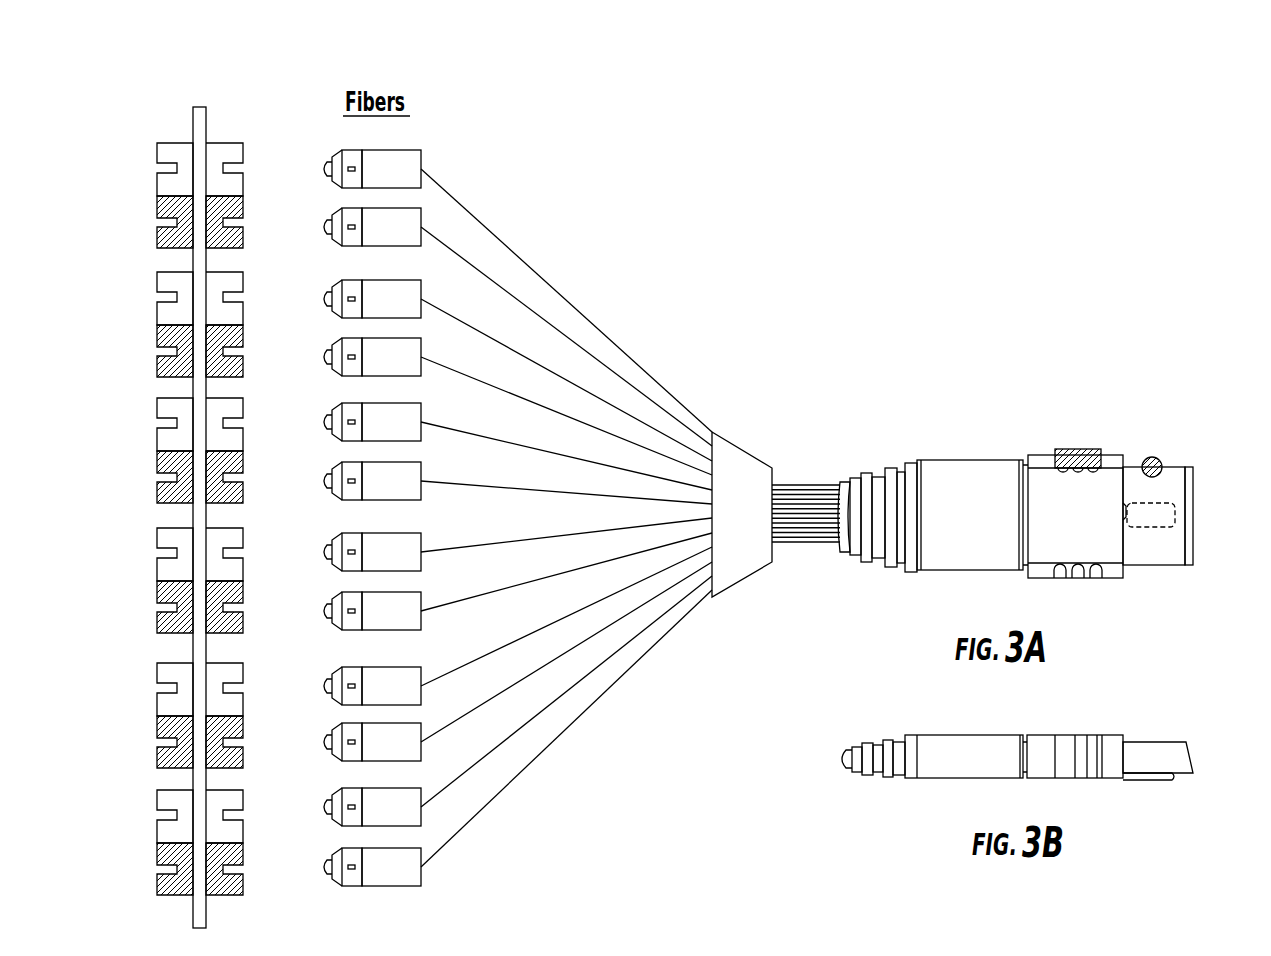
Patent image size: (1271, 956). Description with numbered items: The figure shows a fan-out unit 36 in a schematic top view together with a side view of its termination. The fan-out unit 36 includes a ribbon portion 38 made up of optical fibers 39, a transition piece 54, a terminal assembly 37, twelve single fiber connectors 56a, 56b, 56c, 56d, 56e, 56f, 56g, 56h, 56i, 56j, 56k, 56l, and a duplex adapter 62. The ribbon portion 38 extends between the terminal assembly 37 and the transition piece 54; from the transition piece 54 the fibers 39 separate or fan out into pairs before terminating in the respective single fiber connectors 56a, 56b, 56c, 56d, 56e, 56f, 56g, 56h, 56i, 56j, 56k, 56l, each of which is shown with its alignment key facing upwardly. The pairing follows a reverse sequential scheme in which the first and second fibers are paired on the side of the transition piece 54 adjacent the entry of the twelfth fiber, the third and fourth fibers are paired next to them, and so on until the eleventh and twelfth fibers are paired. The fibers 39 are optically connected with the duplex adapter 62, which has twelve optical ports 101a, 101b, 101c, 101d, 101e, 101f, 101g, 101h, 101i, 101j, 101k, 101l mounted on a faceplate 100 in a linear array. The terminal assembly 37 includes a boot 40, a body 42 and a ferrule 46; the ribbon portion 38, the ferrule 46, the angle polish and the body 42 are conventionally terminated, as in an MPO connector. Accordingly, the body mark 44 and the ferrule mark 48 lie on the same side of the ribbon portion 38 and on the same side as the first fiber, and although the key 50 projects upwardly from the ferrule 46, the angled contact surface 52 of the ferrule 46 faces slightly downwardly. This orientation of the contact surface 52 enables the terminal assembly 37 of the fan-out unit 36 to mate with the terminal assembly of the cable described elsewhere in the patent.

In FIG. 3A, the fan-out unit 36 is at (912, 345).
In FIG. 3A, the terminal assembly 37 is at (1013, 440).
In FIG. 3A, the ribbon portion 38 is at (852, 468).
In FIG. 3A, the optical fibers 39 is at (778, 487).
In FIG. 3A, the boot 40 is at (963, 470).
In FIG. 3B, the boot 40 is at (932, 745).
In FIG. 3A, the body 42 is at (1045, 488).
In FIG. 3B, the body 42 is at (1035, 745).
In FIG. 3A, the body mark 44 is at (1078, 449).
In FIG. 3A, the ferrule 46 is at (1128, 466).
In FIG. 3A, the ferrule mark 48 is at (1152, 457).
In FIG. 3A, the key 50 is at (1160, 505).
In FIG. 3B, the key 50 is at (1170, 781).
In FIG. 3A, the angled contact surface 52 is at (1190, 515).
In FIG. 3B, the angled contact surface 52 is at (1195, 755).
In FIG. 3A, the transition piece 54 is at (735, 447).
In FIG. 3A, the single fiber connector 56a is at (367, 157).
In FIG. 3A, the single fiber connector 56b is at (367, 215).
In FIG. 3A, the single fiber connector 56c is at (367, 287).
In FIG. 3A, the single fiber connector 56d is at (367, 345).
In FIG. 3A, the single fiber connector 56e is at (367, 410).
In FIG. 3A, the single fiber connector 56f is at (367, 469).
In FIG. 3A, the single fiber connector 56g is at (367, 540).
In FIG. 3A, the single fiber connector 56h is at (367, 599).
In FIG. 3A, the single fiber connector 56i is at (367, 674).
In FIG. 3A, the single fiber connector 56j is at (367, 730).
In FIG. 3A, the single fiber connector 56k is at (367, 795).
In FIG. 3A, the single fiber connector 56l is at (367, 855).
In FIG. 3A, the duplex adapter 62 is at (218, 97).
In FIG. 3A, the faceplate 100 is at (200, 118).
In FIG. 3A, the optical port 101a is at (167, 155).
In FIG. 3A, the optical port 101b is at (167, 208).
In FIG. 3A, the optical port 101c is at (167, 284).
In FIG. 3A, the optical port 101d is at (167, 337).
In FIG. 3A, the optical port 101e is at (167, 410).
In FIG. 3A, the optical port 101f is at (167, 463).
In FIG. 3A, the optical port 101g is at (167, 540).
In FIG. 3A, the optical port 101h is at (167, 593).
In FIG. 3A, the optical port 101i is at (167, 675).
In FIG. 3A, the optical port 101j is at (167, 728).
In FIG. 3A, the optical port 101k is at (167, 802).
In FIG. 3A, the optical port 101l is at (167, 855).